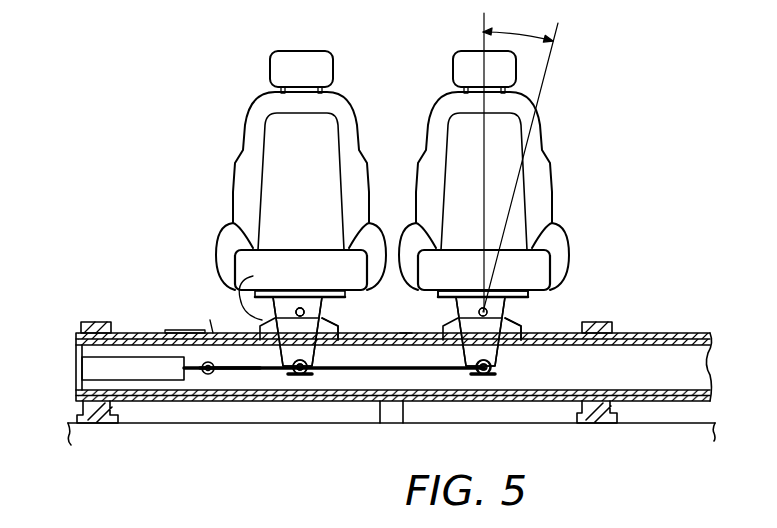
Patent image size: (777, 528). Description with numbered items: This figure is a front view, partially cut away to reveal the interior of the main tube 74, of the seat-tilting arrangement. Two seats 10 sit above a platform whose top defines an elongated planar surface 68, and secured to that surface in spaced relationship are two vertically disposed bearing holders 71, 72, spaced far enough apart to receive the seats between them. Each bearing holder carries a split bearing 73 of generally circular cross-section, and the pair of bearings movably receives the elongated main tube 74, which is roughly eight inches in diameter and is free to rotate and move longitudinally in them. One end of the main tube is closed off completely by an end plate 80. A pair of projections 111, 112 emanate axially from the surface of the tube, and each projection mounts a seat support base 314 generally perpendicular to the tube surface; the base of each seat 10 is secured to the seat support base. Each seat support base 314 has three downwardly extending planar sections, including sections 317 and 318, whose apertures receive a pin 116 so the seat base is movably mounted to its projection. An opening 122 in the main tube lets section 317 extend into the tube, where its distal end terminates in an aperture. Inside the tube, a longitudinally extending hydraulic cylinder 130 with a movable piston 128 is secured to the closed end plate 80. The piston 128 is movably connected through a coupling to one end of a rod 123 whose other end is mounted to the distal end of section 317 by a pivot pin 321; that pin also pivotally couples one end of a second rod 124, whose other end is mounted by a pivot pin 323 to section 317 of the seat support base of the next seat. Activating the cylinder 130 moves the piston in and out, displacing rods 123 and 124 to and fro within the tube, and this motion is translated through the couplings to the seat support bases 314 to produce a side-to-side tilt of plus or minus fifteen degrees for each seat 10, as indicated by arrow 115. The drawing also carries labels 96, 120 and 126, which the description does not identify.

The seat 10 is at (357, 152).
The elongated planar surface 68 is at (308, 420).
The bearing holder 71 is at (98, 322).
The bearing holder 72 is at (605, 322).
The split bearing 73 is at (137, 333).
The main tube 74 is at (404, 333).
The end plate 80 is at (76, 352).
The support 96 is at (403, 415).
The projection 111 is at (330, 325).
The projection 112 is at (521, 333).
The arrow 115 is at (552, 47).
The pin 116 is at (304, 311).
The pedestal link 120 is at (308, 352).
The opening 122 is at (278, 344).
The rod 123 is at (229, 371).
The rod 124 is at (398, 373).
The support plate 126 is at (292, 336).
The piston 128 is at (204, 375).
The hydraulic cylinder 130 is at (162, 362).
The seat support base 314 is at (528, 294).
The planar section 317 is at (262, 289).
The planar section 318 is at (302, 308).
The pivot pin 321 is at (305, 373).
The pivot pin 323 is at (490, 372).